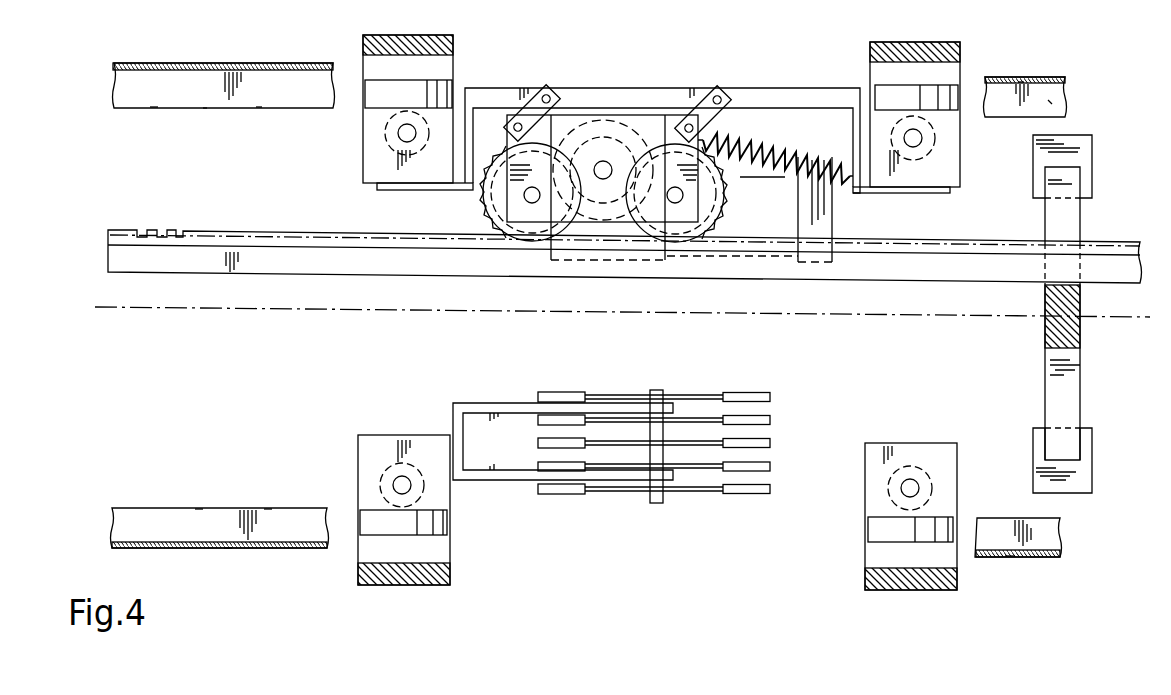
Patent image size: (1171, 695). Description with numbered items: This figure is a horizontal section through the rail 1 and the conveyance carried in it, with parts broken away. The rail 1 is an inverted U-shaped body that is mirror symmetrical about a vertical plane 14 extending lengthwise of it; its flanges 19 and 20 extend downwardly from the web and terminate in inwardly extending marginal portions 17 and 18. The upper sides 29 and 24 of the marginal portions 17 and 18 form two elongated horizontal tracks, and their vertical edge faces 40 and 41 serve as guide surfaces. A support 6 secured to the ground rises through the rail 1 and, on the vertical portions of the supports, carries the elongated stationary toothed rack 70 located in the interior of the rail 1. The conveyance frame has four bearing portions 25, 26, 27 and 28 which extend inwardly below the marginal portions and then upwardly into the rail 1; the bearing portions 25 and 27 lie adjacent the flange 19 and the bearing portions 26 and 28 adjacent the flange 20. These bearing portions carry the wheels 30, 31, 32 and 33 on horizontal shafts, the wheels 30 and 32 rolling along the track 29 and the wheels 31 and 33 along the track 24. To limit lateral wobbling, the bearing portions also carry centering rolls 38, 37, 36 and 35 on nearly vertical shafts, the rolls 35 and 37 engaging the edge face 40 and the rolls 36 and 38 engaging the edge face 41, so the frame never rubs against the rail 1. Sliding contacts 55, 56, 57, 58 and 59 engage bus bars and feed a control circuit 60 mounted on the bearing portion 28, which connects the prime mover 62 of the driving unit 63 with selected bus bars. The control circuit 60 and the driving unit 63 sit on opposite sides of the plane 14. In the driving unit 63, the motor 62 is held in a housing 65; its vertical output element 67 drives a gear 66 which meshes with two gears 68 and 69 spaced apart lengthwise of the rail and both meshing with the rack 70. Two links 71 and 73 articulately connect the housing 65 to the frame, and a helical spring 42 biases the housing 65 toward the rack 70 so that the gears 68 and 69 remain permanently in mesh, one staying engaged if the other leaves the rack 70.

The rail 1 is at (204, 63).
The support 6 is at (1072, 326).
The vertical plane 14 is at (150, 308).
The marginal portion 17 is at (258, 98).
The marginal portion 18 is at (268, 512).
The flange 19 is at (232, 64).
The flange 20 is at (228, 549).
The track 24 is at (198, 518).
The bearing portion 25 is at (928, 114).
The bearing portion 26 is at (910, 497).
The bearing portion 27 is at (396, 112).
The bearing portion 28 is at (378, 506).
The track 29 is at (153, 93).
The wheel 30 is at (374, 92).
The wheel 31 is at (368, 527).
The wheel 32 is at (935, 96).
The wheel 33 is at (870, 532).
The centering roll 35 is at (394, 138).
The centering roll 36 is at (381, 486).
The centering roll 37 is at (930, 140).
The centering roll 38 is at (926, 485).
The vertical edge face 40 is at (205, 109).
The vertical edge face 41 is at (158, 506).
The helical spring 42 is at (796, 160).
The sliding contact 55 is at (560, 393).
The sliding contact 56 is at (545, 419).
The sliding contact 57 is at (542, 445).
The sliding contact 58 is at (545, 467).
The sliding contact 59 is at (548, 495).
The control circuit 60 is at (473, 483).
The prime mover 62 is at (815, 216).
The driving unit 63 is at (640, 156).
The housing 65 is at (655, 128).
The gear 66 is at (606, 138).
The output element 67 is at (601, 165).
The gear 68 is at (676, 148).
The gear 69 is at (545, 140).
The toothed rack 70 is at (254, 232).
The link 71 is at (528, 102).
The link 73 is at (700, 100).